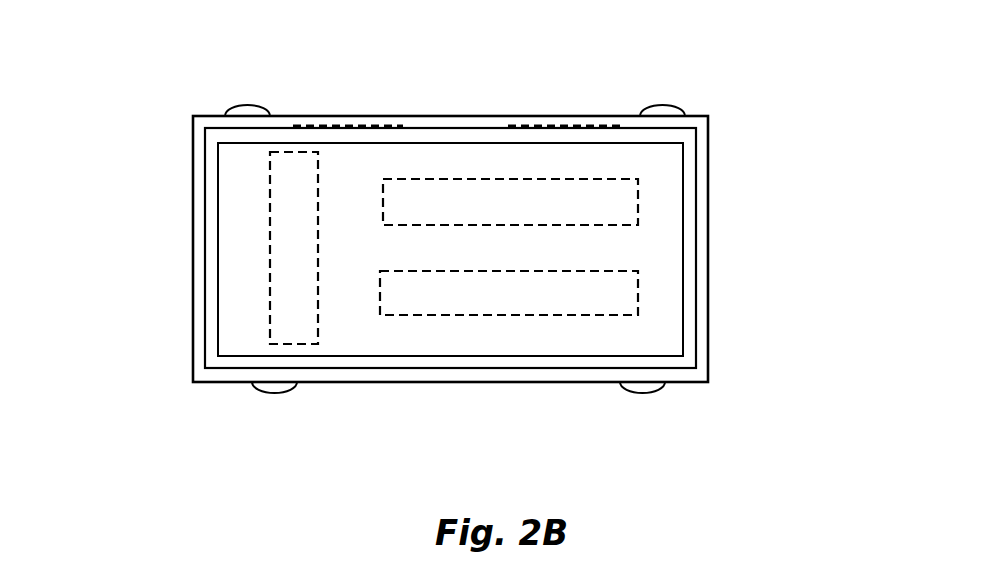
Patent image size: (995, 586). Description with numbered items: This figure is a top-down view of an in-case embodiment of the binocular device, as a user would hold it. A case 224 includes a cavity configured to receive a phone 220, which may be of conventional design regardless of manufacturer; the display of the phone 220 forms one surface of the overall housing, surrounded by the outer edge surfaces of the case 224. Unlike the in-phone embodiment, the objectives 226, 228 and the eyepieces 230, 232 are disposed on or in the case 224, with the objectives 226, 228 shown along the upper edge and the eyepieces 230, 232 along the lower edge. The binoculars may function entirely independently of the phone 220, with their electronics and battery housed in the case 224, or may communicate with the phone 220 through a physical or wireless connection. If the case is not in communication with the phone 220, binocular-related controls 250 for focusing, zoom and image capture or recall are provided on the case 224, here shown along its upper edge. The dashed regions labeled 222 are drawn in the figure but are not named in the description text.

The phone 220 is at (666, 247).
The chambers 222 is at (580, 198).
The case 224 is at (708, 295).
The objective 226 is at (235, 105).
The objective 228 is at (660, 105).
The eyepiece 230 is at (257, 388).
The eyepiece 232 is at (640, 392).
The binocular-related controls 250 is at (368, 118).